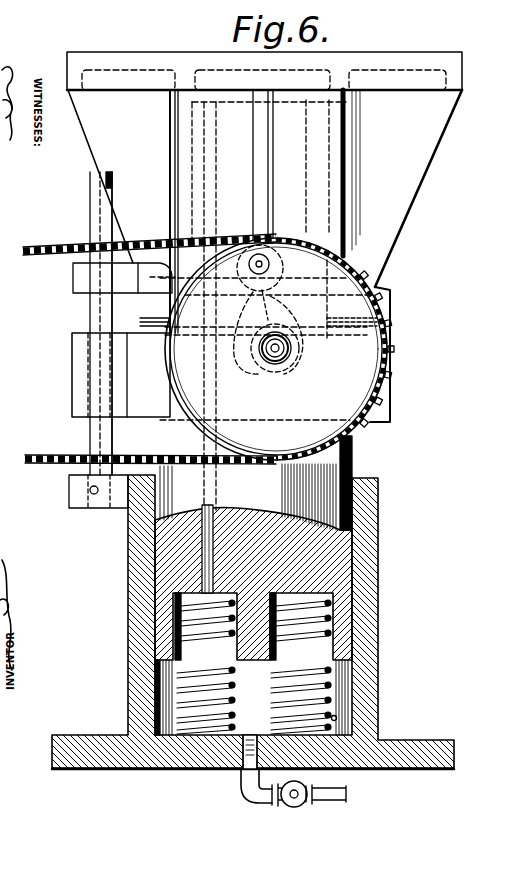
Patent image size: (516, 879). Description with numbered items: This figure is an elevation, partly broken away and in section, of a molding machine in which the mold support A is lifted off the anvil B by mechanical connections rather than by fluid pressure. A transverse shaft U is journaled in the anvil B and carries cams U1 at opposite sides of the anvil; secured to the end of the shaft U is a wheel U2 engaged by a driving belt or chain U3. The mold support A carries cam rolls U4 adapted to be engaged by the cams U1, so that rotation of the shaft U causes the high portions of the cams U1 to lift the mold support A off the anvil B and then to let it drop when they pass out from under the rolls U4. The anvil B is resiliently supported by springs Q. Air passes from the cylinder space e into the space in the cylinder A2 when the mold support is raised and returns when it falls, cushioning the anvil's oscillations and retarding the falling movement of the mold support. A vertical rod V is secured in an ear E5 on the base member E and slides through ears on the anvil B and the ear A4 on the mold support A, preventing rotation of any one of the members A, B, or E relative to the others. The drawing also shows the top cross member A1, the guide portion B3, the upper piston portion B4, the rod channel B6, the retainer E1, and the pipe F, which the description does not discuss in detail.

The top cross beam of frame A1 is at (136, 62).
The mold support A is at (265, 256).
The cylinder A2 is at (186, 173).
The ear A4 is at (82, 283).
The cam rolls U4 is at (306, 173).
The driving belt or chain U3 is at (30, 256).
The vertical rod V is at (90, 437).
The guide block B3 is at (78, 372).
The anvil B is at (202, 548).
The piston upper portion B4 is at (256, 483).
The piston rod channel B6 is at (207, 549).
The transverse shaft U is at (290, 352).
The cams U1 is at (267, 321).
The wheel U2 is at (395, 386).
The base member E is at (400, 742).
The spring retainer E1 is at (345, 680).
The ear E5 is at (69, 496).
The cylinder space e is at (338, 718).
The springs Q is at (243, 664).
The drain pipe with valve F is at (247, 782).